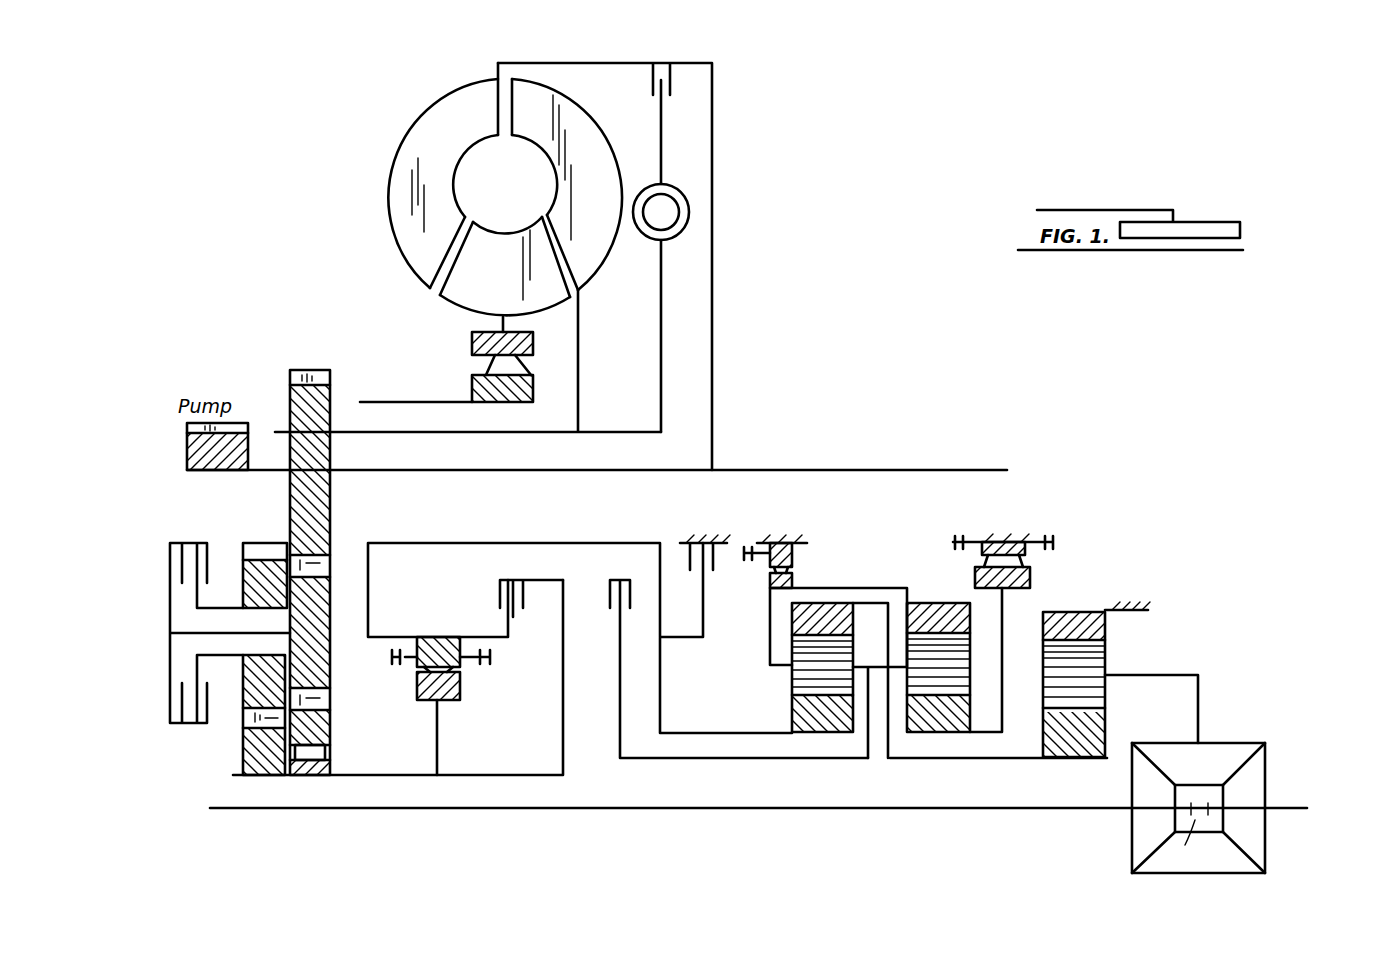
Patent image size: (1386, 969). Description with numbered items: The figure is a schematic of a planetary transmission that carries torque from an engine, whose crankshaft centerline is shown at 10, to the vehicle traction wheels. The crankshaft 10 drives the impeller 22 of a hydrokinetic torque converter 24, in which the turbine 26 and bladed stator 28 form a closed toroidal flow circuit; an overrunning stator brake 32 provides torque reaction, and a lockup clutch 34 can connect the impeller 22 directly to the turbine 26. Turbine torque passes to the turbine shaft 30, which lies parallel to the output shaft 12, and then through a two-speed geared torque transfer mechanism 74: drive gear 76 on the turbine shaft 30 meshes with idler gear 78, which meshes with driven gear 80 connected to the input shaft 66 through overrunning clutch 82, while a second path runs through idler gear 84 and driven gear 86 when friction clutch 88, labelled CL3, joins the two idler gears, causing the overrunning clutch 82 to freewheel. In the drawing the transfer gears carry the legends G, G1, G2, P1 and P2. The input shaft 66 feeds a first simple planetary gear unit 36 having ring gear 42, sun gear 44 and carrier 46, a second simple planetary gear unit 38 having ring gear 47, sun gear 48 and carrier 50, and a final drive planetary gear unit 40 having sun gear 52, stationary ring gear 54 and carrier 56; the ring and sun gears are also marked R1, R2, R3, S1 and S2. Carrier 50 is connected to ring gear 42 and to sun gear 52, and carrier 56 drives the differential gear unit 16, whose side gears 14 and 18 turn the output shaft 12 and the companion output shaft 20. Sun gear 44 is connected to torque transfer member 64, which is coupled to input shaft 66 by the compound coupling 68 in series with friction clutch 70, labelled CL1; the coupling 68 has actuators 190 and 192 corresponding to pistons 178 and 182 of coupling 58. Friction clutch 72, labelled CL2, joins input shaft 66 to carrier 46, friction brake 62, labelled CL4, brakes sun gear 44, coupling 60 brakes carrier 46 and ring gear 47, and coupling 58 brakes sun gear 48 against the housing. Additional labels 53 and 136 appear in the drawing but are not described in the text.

The crankshaft 10 is at (1005, 468).
The output shaft 12 is at (720, 810).
The side gear 14 is at (1142, 840).
The output differential gear unit 16 is at (1228, 742).
The side gear 18 is at (1258, 780).
The companion torque output shaft 20 is at (1300, 808).
The impeller 22 is at (505, 117).
The hydrokinetic torque converter 24 is at (398, 122).
The turbine 26 is at (617, 208).
The bladed stator 28 is at (500, 277).
The turbine shaft 30 is at (450, 433).
The overrunning stator brake 32 is at (488, 368).
The lockup clutch 34 is at (664, 128).
The first simple planetary gear unit 36 is at (790, 700).
The second simple planetary gear unit 38 is at (932, 735).
The final drive planetary gear unit 40 is at (1050, 752).
The ring gear 42 is at (800, 620).
The sun gear 44 is at (800, 718).
The carrier 46 is at (775, 672).
The ring gear 47 is at (922, 610).
The sun gear 48 is at (965, 715).
The carrier 50 is at (890, 758).
The sun gear 52 is at (1105, 722).
The carrier 53 is at (1078, 752).
The ring gear 54 is at (1120, 608).
The carrier 56 is at (1180, 675).
The releasable coupling 58 is at (1002, 575).
The releasable coupling 60 is at (800, 562).
The friction brake 62 is at (688, 562).
The torque transfer member 64 is at (450, 542).
The torque input shaft 66 is at (398, 777).
The releasable compound coupling 68 is at (437, 660).
The friction clutch 70 is at (514, 612).
The second friction clutch 72 is at (608, 612).
The two-speed geared torque transfer mechanism 74 is at (333, 556).
The drive gear 76 is at (333, 385).
The idler gear 78 is at (320, 605).
The driven gear 80 is at (316, 745).
The overrunning clutch 82 is at (312, 765).
The idler gear 84 is at (250, 674).
The driven gear 86 is at (252, 748).
The friction clutch 88 is at (185, 568).
The brake actuator 136 is at (754, 563).
The piston 178 is at (1030, 545).
The piston 182 is at (965, 545).
The actuator 190 is at (468, 660).
The actuator 192 is at (405, 660).
The gear G is at (332, 512).
The gear G1 is at (324, 725).
The gear G2 is at (238, 775).
The pinion P1 is at (322, 675).
The pinion P2 is at (258, 560).
The ring gear 1 R1 is at (830, 612).
The ring gear 2 R2 is at (965, 618).
The ring gear 3 R3 is at (1073, 612).
The sun gear 1 S1 is at (822, 735).
The sun gear 2 S2 is at (965, 708).
The clutch CL1 is at (528, 585).
The clutch CL2 is at (734, 656).
The clutch CL3 is at (204, 657).
The clutch CL4 is at (705, 540).